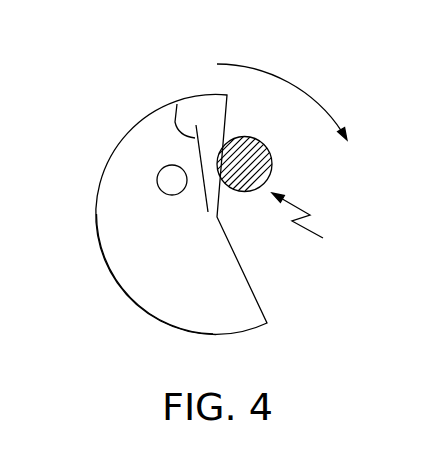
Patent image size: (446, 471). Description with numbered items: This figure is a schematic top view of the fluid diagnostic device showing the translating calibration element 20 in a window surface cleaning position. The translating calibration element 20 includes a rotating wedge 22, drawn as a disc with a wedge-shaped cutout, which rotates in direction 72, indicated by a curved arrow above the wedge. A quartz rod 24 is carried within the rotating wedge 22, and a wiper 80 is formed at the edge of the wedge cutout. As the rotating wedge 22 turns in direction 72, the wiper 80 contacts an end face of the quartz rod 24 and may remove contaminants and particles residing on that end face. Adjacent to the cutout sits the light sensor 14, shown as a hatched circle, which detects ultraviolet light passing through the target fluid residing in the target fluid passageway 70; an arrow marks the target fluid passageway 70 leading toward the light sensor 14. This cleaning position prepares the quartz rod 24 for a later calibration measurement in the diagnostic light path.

The translating calibration element 20 is at (153, 188).
The rotating wedge 22 is at (141, 301).
The quartz rod 24 is at (172, 196).
The wiper 80 is at (177, 105).
The light sensor 14 is at (273, 167).
The direction 72 is at (297, 90).
The target fluid passageway 70 is at (314, 227).